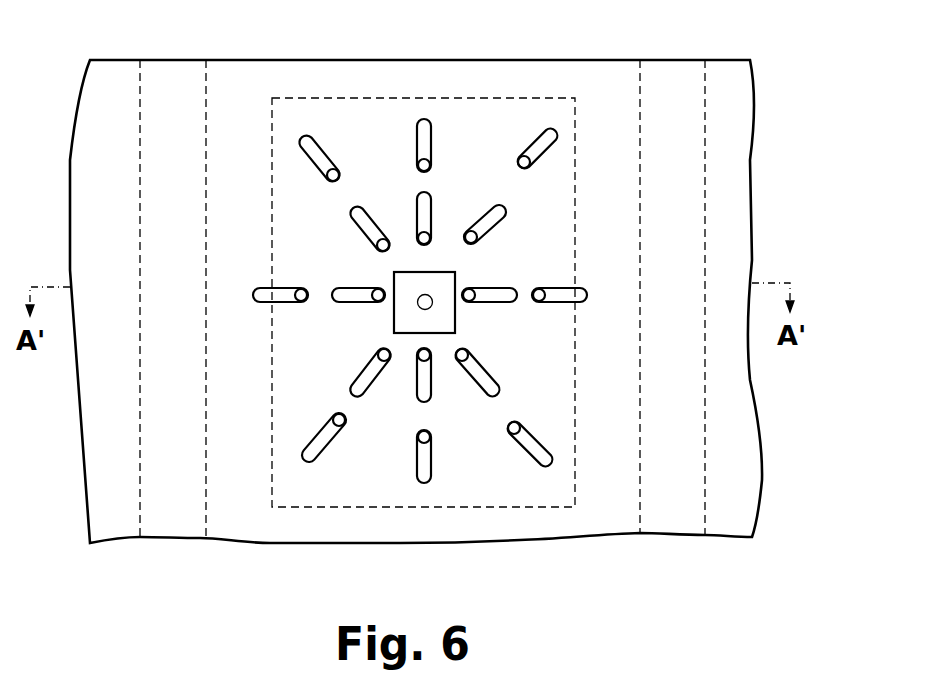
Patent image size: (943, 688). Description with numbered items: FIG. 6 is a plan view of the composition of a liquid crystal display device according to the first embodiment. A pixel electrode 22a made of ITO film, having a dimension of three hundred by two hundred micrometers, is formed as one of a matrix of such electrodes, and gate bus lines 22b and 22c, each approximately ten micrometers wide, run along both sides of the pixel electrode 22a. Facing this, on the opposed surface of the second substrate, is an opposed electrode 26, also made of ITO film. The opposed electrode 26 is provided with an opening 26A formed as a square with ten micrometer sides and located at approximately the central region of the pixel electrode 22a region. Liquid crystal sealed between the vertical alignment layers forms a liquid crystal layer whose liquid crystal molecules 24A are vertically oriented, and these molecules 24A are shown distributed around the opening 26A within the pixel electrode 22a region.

The pixel electrode 22a is at (336, 98).
The gate bus line 22b is at (206, 98).
The gate bus line 22c is at (705, 95).
The liquid crystal molecules 24A is at (426, 118).
The opposed electrode 26 is at (750, 162).
The opening 26A is at (455, 318).